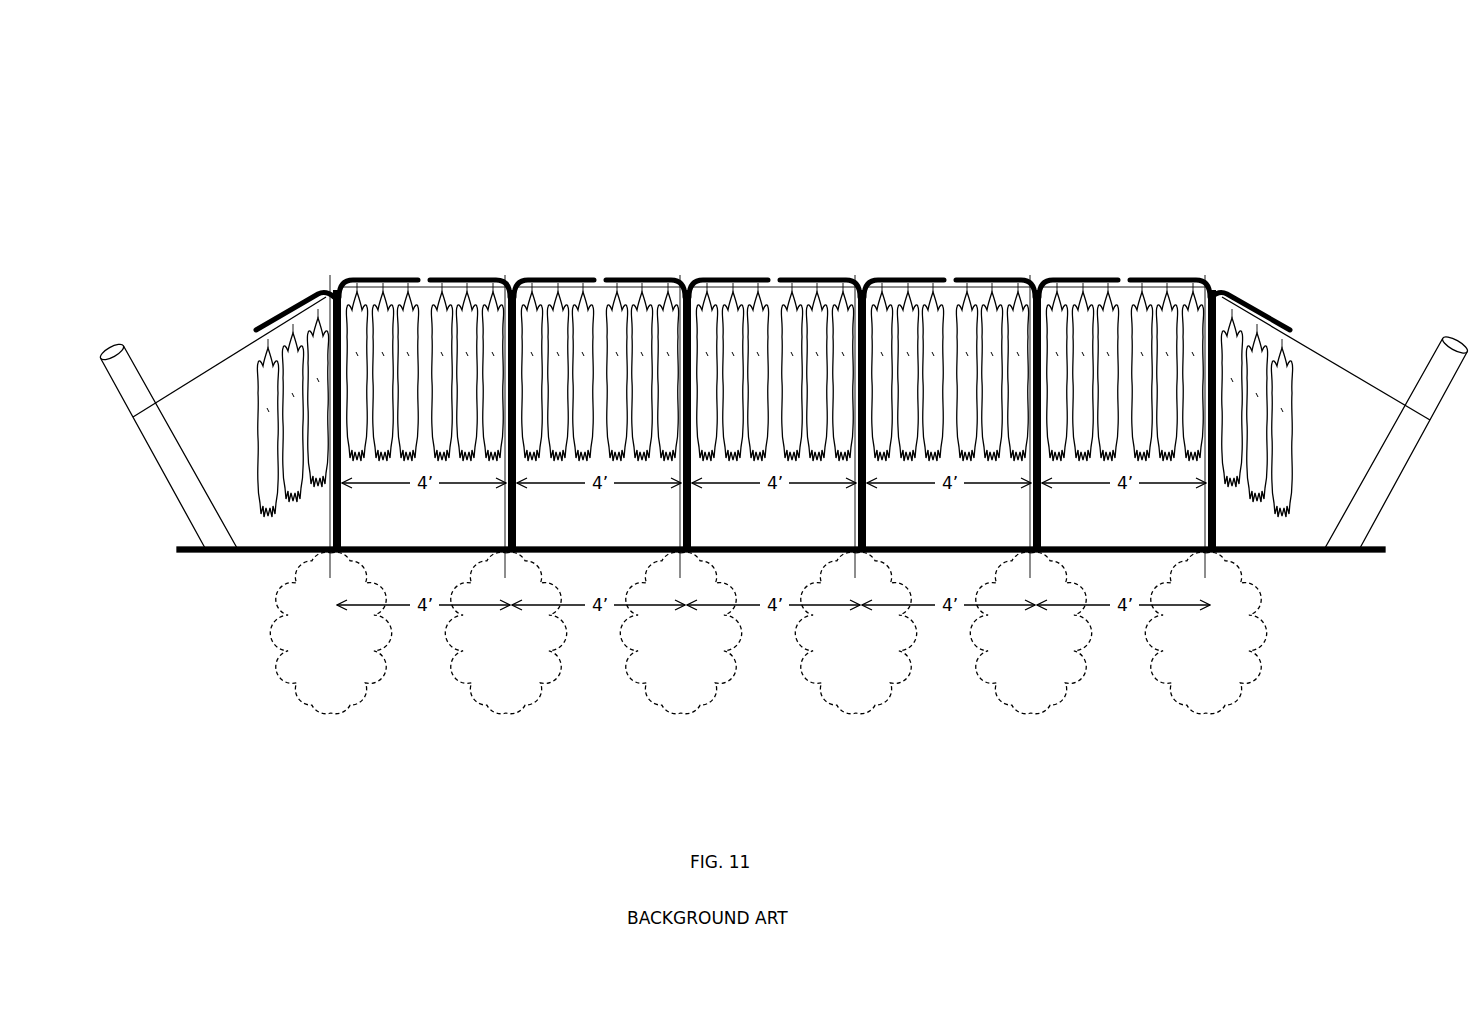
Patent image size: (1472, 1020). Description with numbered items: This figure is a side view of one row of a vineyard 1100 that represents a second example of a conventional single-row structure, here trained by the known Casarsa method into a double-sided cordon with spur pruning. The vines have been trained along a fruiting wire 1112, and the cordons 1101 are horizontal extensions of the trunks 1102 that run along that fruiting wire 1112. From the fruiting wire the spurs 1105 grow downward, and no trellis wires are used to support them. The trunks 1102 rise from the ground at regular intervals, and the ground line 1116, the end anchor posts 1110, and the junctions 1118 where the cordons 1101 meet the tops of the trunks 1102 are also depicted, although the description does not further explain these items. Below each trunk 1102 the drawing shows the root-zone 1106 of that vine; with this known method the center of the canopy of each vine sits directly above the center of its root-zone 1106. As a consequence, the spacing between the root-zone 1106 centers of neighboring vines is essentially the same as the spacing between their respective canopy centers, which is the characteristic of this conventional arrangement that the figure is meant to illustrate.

The vineyard 1100 is at (805, 118).
The cordons 1101 is at (329, 290).
The trunks 1102 is at (343, 522).
The spurs 1105 is at (1287, 340).
The root-zone 1106 is at (345, 708).
The anchor pole 1110 is at (1450, 373).
The fruiting wire 1112 is at (230, 347).
The ground surface 1116 is at (1279, 556).
The post top connector 1118 is at (305, 295).